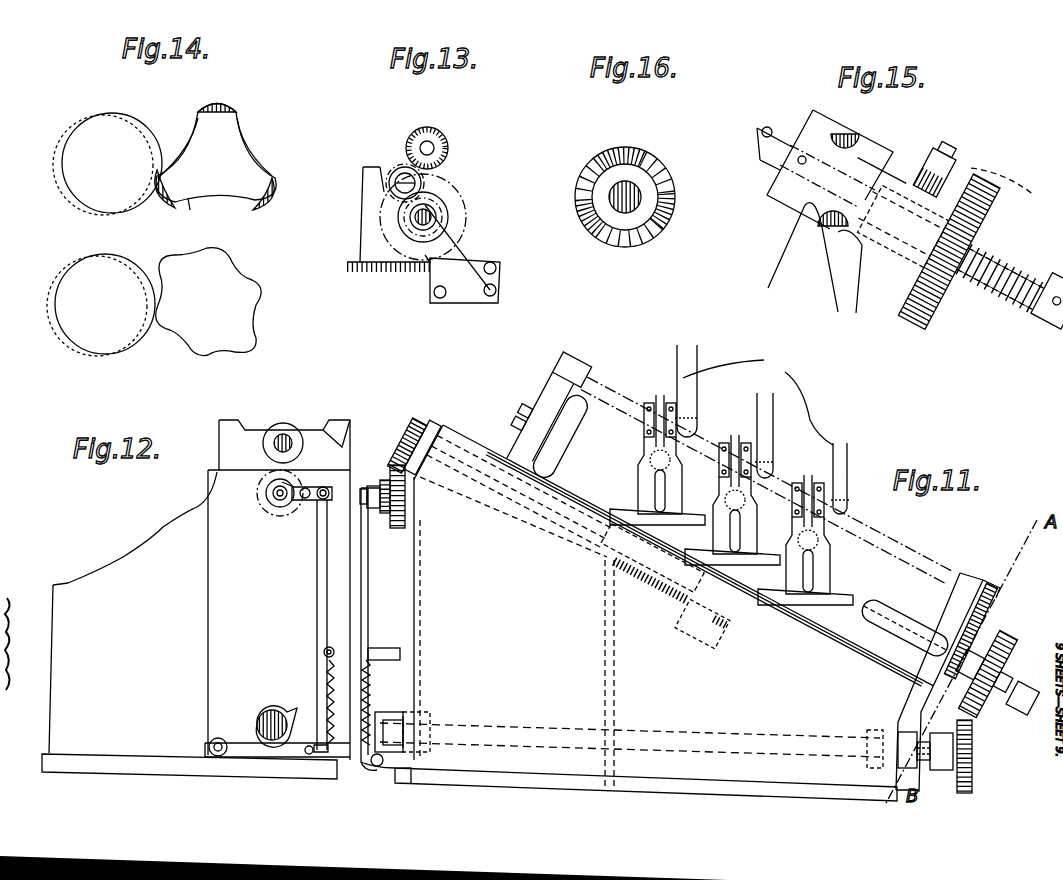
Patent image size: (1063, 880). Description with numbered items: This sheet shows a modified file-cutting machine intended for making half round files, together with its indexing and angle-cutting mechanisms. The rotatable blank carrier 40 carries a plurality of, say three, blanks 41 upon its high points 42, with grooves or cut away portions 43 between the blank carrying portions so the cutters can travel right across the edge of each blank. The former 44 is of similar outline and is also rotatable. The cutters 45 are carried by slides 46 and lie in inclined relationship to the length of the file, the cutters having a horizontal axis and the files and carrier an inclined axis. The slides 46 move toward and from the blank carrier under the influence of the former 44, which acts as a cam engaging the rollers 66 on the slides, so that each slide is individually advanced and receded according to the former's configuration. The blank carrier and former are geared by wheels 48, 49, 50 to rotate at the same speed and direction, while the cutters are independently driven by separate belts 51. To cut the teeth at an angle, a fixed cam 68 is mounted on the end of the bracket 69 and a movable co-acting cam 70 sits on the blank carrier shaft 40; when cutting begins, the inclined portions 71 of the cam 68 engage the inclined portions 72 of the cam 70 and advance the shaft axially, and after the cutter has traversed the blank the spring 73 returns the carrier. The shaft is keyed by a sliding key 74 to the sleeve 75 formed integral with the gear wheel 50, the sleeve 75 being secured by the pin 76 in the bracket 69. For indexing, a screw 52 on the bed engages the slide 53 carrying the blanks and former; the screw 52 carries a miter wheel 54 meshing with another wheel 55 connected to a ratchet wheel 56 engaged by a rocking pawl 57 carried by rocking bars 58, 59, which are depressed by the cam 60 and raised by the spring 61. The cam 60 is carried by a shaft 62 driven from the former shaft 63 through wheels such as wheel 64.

In FIG. 14, the blank carrier 40 is at (240, 152).
In FIG. 16, the blank carrier 40 is at (620, 197).
In FIG. 15, the blank carrier 40 is at (873, 206).
In FIG. 11, the blank carrier 40 is at (769, 476).
In FIG. 14, the blanks 41 is at (230, 104).
In FIG. 14, the high points 42 is at (240, 118).
In FIG. 14, the grooves or cut away portions 43 is at (180, 172).
In FIG. 14, the former 44 is at (222, 283).
In FIG. 11, the cutters 45 is at (661, 400).
In FIG. 11, the slides 46 is at (642, 450).
In FIG. 13, the wheel 48 is at (440, 212).
In FIG. 11, the wheel 48 is at (933, 610).
In FIG. 13, the wheel 49 is at (395, 167).
In FIG. 11, the wheel 49 is at (985, 622).
In FIG. 13, the gear wheel 50 is at (440, 151).
In FIG. 15, the gear wheel 50 is at (980, 250).
In FIG. 11, the gear wheel 50 is at (1012, 582).
In FIG. 11, the belts 51 is at (786, 378).
In FIG. 11, the screw 52 is at (626, 604).
In FIG. 11, the slide 53 is at (681, 644).
In FIG. 11, the miter wheel 54 is at (419, 425).
In FIG. 11, the wheel 55 is at (390, 515).
In FIG. 12, the ratchet wheel 56 is at (272, 508).
In FIG. 11, the ratchet wheel 56 is at (397, 529).
In FIG. 12, the rocking pawl 57 is at (307, 487).
In FIG. 12, the rocking bar 58 is at (317, 582).
In FIG. 11, the rocking bar 58 is at (362, 605).
In FIG. 12, the rocking bar 59 is at (225, 738).
In FIG. 11, the rocking bar 59 is at (400, 765).
In FIG. 12, the cam 60 is at (294, 708).
In FIG. 11, the cam 60 is at (405, 712).
In FIG. 12, the spring 61 is at (320, 678).
In FIG. 11, the spring 61 is at (375, 680).
In FIG. 12, the shaft 62 is at (258, 722).
In FIG. 11, the shaft 62 is at (648, 742).
In FIG. 11, the former shaft 63 is at (1020, 688).
In FIG. 11, the wheel 64 is at (982, 700).
In FIG. 11, the rollers 66 is at (648, 482).
In FIG. 16, the fixed cam 68 is at (662, 170).
In FIG. 15, the fixed cam 68 is at (943, 155).
In FIG. 15, the bracket 69 is at (921, 188).
In FIG. 15, the movable co-acting cam 70 is at (812, 118).
In FIG. 16, the inclined portions 71 is at (618, 155).
In FIG. 15, the inclined portions 71 is at (894, 139).
In FIG. 15, the inclined portions 72 is at (803, 210).
In FIG. 15, the spring 73 is at (978, 298).
In FIG. 15, the sliding key 74 is at (1011, 163).
In FIG. 15, the sleeve 75 is at (1014, 240).
In FIG. 15, the pin 76 is at (972, 141).